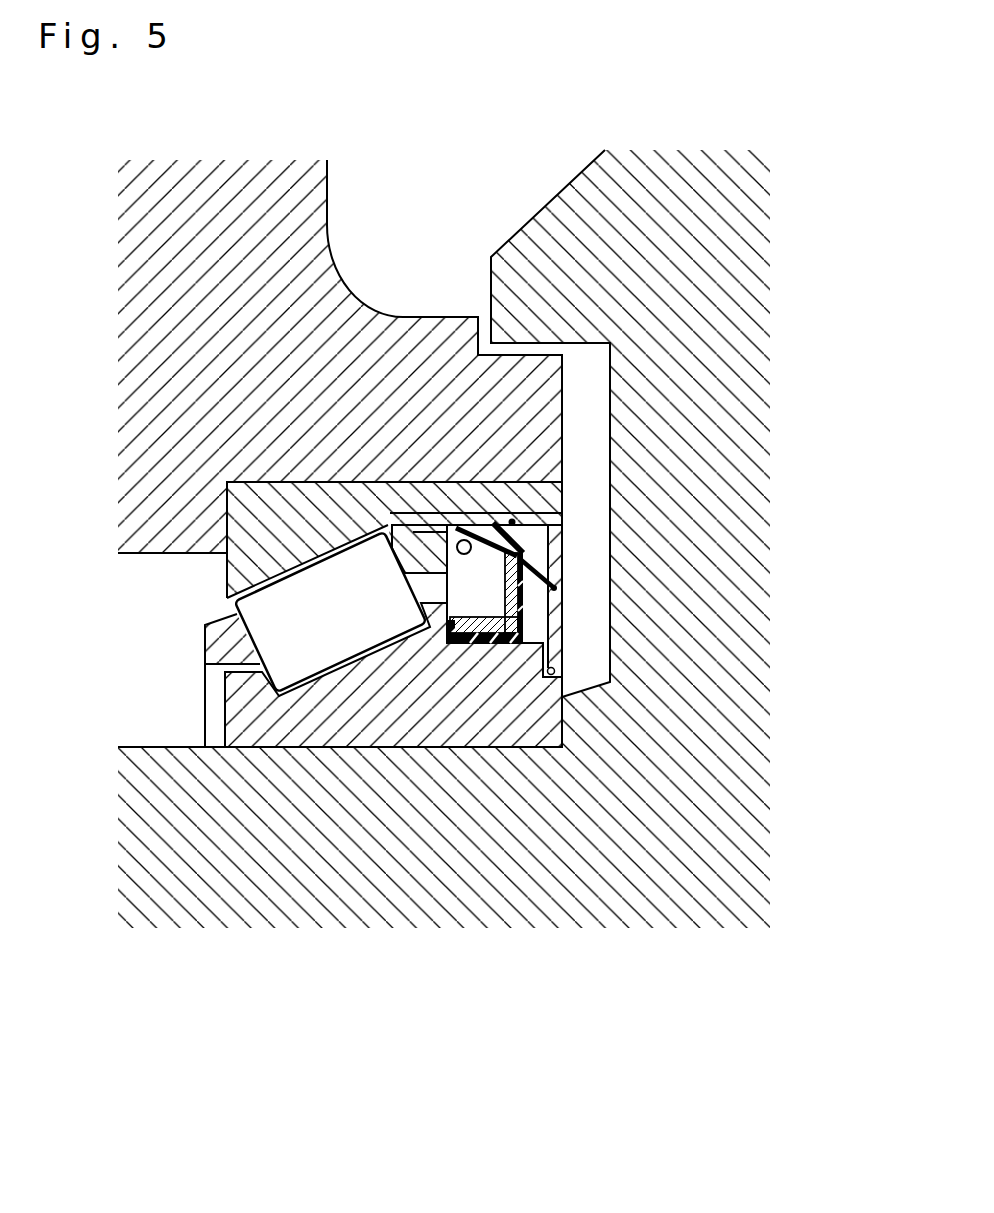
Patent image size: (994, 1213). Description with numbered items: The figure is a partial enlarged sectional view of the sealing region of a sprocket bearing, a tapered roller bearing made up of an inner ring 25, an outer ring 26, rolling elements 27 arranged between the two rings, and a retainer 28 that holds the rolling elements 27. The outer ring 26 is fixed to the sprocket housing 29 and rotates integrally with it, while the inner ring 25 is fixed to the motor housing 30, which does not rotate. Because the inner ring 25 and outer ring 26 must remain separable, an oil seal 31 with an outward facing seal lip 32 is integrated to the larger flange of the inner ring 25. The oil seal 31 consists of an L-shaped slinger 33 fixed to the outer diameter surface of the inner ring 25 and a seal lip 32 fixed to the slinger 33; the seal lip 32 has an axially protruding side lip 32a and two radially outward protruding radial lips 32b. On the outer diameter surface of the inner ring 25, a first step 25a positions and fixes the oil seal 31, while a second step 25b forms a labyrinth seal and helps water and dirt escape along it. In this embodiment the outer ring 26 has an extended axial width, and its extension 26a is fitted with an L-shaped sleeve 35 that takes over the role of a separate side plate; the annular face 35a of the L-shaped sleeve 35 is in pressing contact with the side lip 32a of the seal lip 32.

The inner ring 25 is at (451, 788).
The first step 25a is at (463, 643).
The second step 25b is at (562, 622).
The outer ring 26 is at (394, 351).
The extension 26a is at (488, 495).
The rolling elements 27 is at (305, 643).
The retainer 28 is at (207, 695).
The sprocket housing 29 is at (267, 303).
The motor housing 30 is at (556, 680).
The oil seal 31 is at (480, 578).
The seal lip 32 is at (578, 562).
The side lip 32a is at (531, 562).
The radial lips 32b is at (514, 525).
The L-shaped slinger 33 is at (490, 628).
The L-shaped sleeve 35 is at (457, 527).
The annular face 35a is at (554, 594).